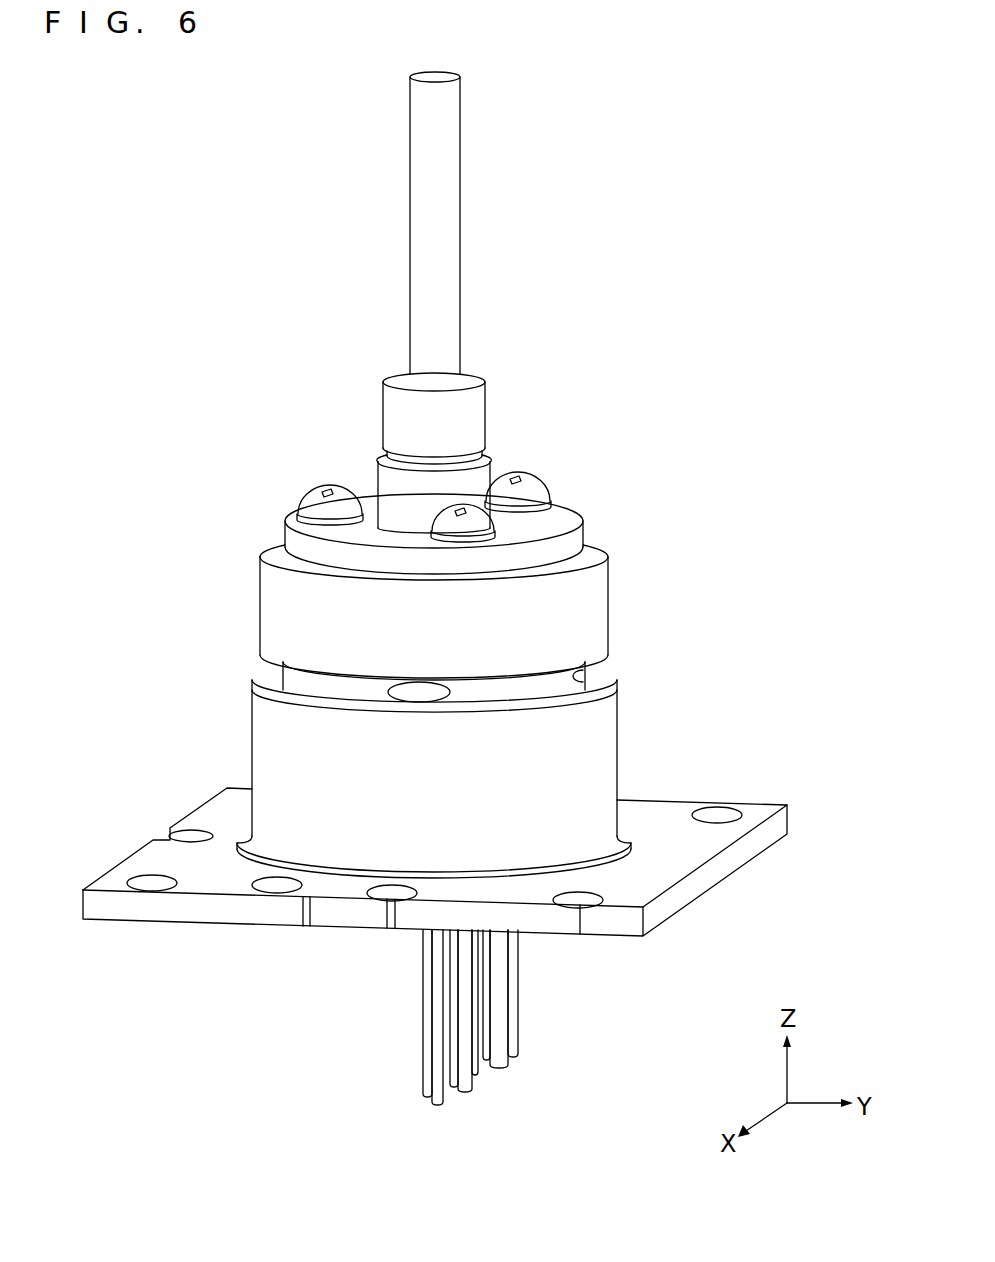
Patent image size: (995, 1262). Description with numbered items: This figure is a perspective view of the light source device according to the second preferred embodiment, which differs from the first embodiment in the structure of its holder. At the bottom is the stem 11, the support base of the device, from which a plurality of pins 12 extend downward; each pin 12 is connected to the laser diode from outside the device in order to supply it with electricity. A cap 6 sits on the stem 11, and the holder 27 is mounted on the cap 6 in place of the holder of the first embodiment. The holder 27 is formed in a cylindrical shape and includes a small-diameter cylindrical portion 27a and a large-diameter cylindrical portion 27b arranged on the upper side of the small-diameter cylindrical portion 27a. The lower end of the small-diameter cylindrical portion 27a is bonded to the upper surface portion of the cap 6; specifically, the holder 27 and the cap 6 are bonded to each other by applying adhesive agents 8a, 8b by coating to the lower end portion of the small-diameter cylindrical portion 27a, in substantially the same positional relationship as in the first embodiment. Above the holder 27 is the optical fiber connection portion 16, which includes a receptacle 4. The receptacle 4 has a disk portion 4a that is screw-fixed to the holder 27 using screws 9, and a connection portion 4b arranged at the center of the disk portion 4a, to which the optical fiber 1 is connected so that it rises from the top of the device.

The optical fiber 1 is at (448, 117).
The receptacle 4 is at (466, 473).
The disk portion 4a is at (563, 520).
The connection portion 4b is at (468, 413).
The cap 6 is at (275, 752).
The adhesive agent 8a is at (418, 696).
The adhesive agent 8b is at (573, 678).
The screws 9 is at (315, 492).
The stem 11 is at (673, 865).
The pin 12 is at (503, 1017).
The optical fiber connection portion 16 is at (437, 473).
The holder 27 is at (427, 617).
The small-diameter cylindrical portion 27a is at (280, 670).
The large-diameter cylindrical portion 27b is at (272, 607).